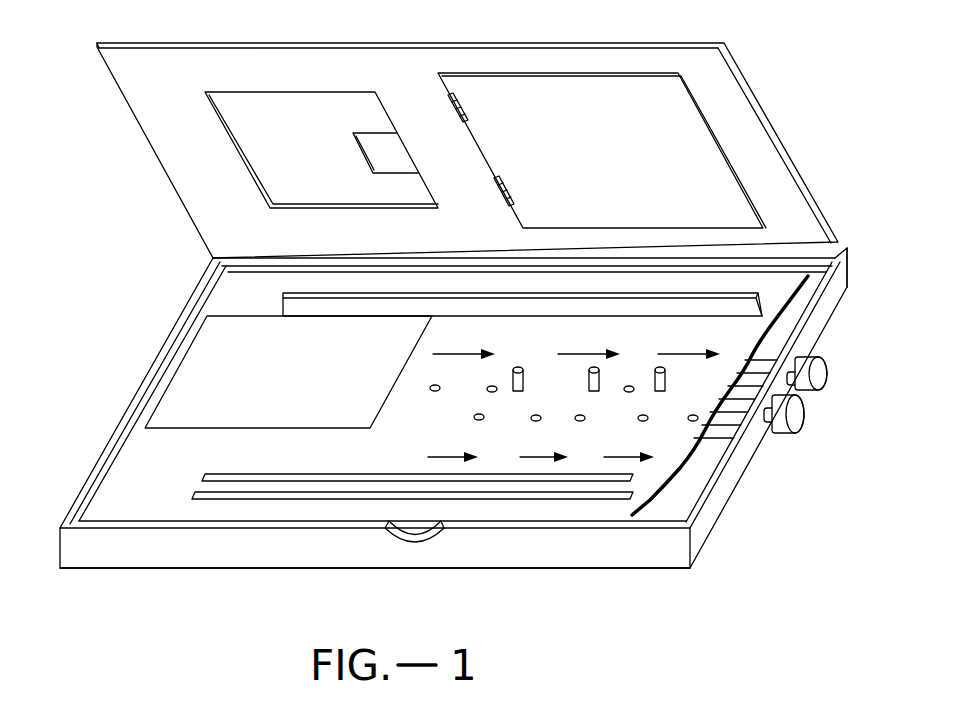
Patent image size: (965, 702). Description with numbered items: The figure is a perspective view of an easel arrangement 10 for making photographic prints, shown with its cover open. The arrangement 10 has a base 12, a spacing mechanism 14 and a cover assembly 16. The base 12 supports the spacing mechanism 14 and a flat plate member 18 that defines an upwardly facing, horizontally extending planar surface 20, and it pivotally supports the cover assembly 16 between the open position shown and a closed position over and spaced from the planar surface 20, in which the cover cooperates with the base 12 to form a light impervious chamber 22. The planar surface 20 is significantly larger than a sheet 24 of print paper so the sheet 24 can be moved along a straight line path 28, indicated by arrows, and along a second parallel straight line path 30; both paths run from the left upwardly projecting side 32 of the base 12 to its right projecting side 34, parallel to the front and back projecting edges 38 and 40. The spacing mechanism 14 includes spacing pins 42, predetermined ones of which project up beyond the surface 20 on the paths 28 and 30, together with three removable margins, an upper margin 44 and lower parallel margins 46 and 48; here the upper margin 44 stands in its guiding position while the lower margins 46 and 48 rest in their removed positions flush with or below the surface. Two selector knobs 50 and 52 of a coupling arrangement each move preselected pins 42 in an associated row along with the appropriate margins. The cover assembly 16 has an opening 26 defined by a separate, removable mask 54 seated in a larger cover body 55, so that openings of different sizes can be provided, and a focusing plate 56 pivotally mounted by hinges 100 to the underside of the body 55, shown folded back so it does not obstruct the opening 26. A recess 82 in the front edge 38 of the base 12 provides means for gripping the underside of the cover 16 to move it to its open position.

The easel arrangement 10 is at (828, 74).
The base 12 is at (92, 460).
The spacing mechanism 14 is at (710, 448).
The cover assembly 16 is at (745, 62).
The flat plate member 18 is at (493, 505).
The planar surface 20 is at (454, 440).
The light impervious chamber 22 is at (127, 508).
The sheet 24 is at (292, 384).
The opening 26 is at (372, 147).
The straight line path 28 is at (441, 354).
The second parallel straight line path 30 is at (538, 457).
The left upwardly projecting side 32 is at (142, 385).
The right projecting side 34 is at (700, 506).
The front projecting edge 38 is at (210, 530).
The back projecting edge 40 is at (808, 270).
The spacing pins 42 is at (525, 378).
The upper margin 44 is at (533, 297).
The lower margin 46 is at (607, 482).
The lower margin 48 is at (578, 500).
The selector knob 50 is at (800, 416).
The selector knob 52 is at (824, 373).
The mask 54 is at (364, 184).
The cover body 55 is at (487, 237).
The focusing plate 56 is at (622, 215).
The recess 82 is at (417, 545).
The hinges 100 is at (466, 108).